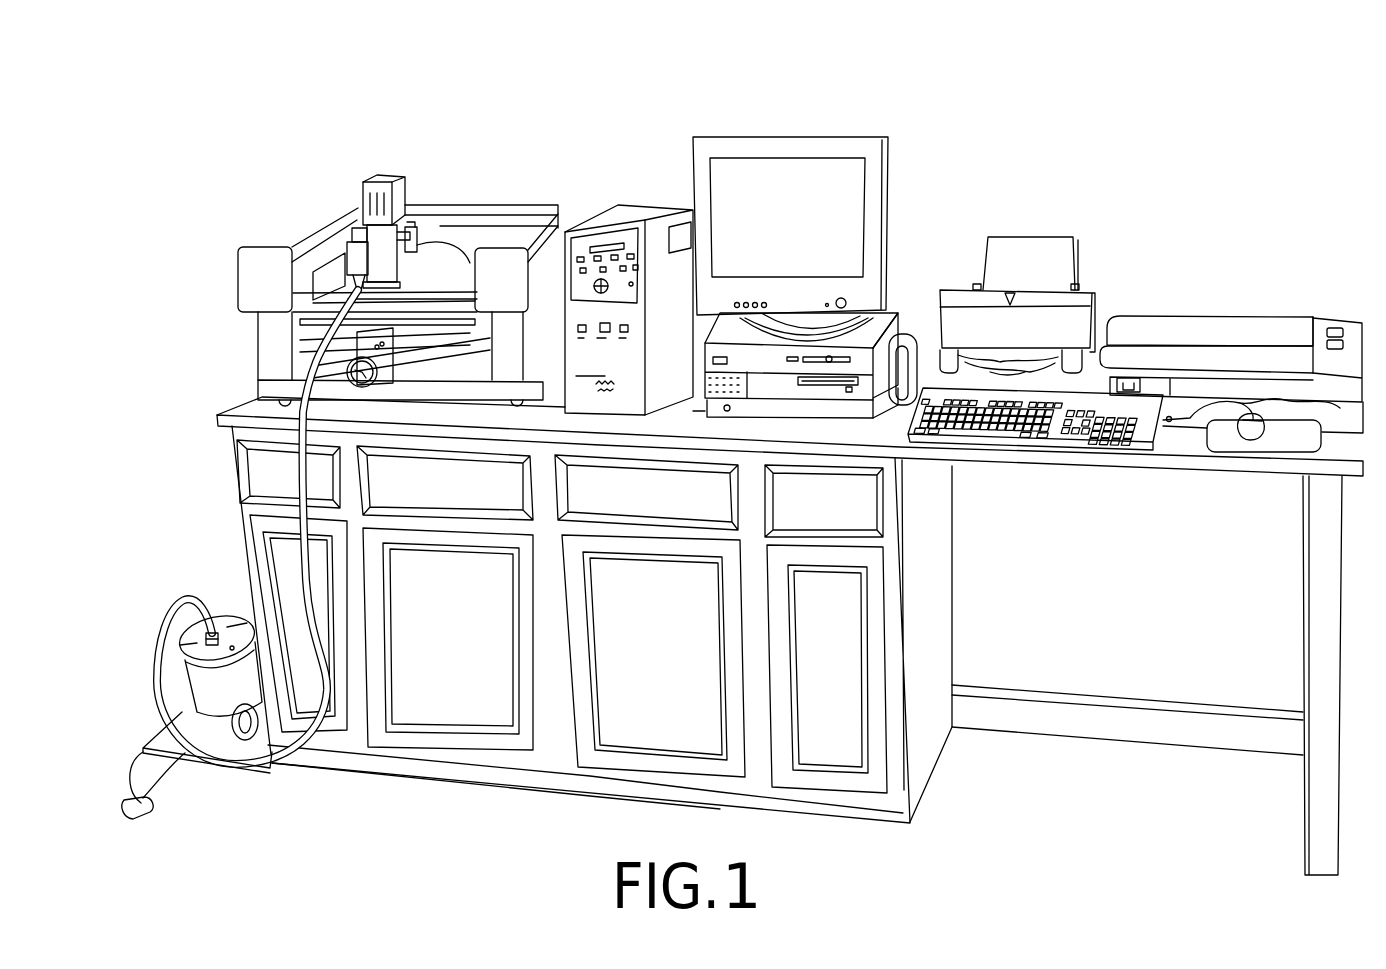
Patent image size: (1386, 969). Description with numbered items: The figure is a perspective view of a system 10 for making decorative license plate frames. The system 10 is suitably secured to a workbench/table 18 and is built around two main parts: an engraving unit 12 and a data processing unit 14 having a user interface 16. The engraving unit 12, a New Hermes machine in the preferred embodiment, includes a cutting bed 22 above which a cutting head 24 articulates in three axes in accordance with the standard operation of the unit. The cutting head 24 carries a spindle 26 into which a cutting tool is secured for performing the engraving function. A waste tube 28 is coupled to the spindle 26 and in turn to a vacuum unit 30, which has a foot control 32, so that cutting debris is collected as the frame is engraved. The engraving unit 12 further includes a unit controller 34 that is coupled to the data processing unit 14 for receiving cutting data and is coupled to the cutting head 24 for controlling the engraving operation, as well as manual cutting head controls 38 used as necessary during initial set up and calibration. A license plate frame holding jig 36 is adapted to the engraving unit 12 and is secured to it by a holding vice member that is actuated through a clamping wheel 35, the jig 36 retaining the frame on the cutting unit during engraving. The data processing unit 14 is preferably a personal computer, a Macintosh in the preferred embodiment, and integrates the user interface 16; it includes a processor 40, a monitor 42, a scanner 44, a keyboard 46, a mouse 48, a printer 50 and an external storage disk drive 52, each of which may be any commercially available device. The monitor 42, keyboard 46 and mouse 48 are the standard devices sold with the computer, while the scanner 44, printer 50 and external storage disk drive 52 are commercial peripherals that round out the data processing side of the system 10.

The system 10 is at (1020, 97).
The engraving unit 12 is at (432, 148).
The data processing unit 14 is at (905, 262).
The user interface 16 is at (1058, 192).
The workbench/table 18 is at (932, 583).
The cutting bed 22 is at (452, 326).
The cutting head 24 is at (363, 197).
The spindle 26 is at (358, 267).
The waste tube 28 is at (300, 408).
The vacuum unit 30 is at (225, 615).
The foot control 32 is at (143, 813).
The unit controller 34 is at (633, 220).
The clamping wheel 35 is at (347, 367).
The license plate frame holding jig 36 is at (430, 322).
The manual cutting head controls 38 is at (618, 290).
The processor 40 is at (777, 385).
The monitor 42 is at (850, 145).
The scanner 44 is at (1222, 327).
The keyboard 46 is at (1095, 440).
The mouse 48 is at (1253, 440).
The printer 50 is at (1068, 327).
The external storage disk drive 52 is at (905, 405).